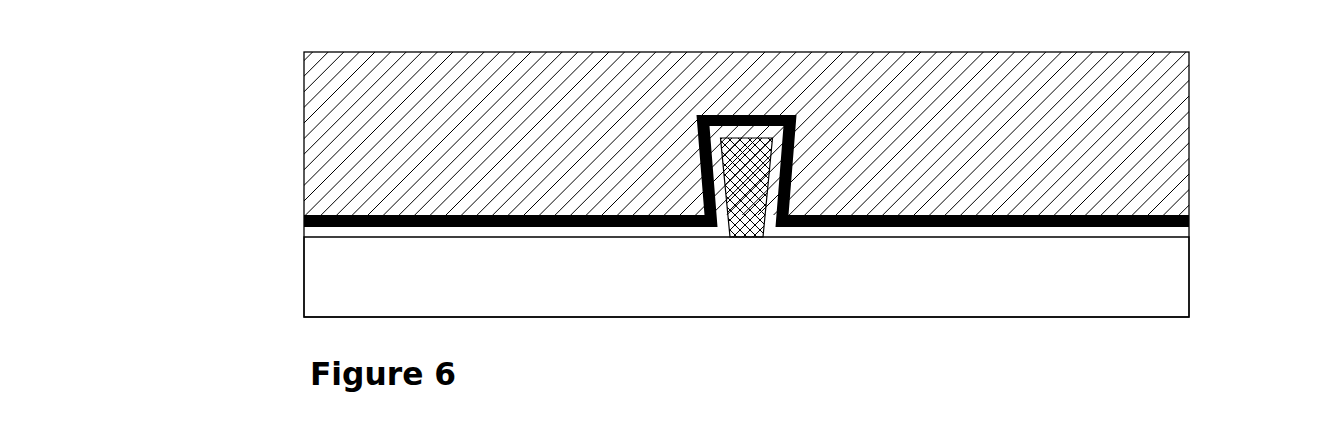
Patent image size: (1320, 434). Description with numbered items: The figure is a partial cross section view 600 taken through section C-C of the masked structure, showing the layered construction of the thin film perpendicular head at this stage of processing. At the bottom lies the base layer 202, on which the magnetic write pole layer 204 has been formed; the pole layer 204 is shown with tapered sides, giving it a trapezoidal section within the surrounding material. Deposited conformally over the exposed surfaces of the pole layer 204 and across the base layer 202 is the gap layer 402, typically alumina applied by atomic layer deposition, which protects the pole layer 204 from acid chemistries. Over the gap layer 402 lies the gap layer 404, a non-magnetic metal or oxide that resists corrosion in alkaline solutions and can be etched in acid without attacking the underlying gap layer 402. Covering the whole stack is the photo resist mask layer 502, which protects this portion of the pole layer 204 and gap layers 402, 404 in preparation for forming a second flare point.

The partial cross section view 600 is at (398, 43).
The photo resist mask layer 502 is at (538, 136).
The gap layer 402 is at (1189, 229).
The gap layer 404 is at (697, 118).
The write pole layer 204 is at (747, 228).
The base layer 202 is at (672, 288).